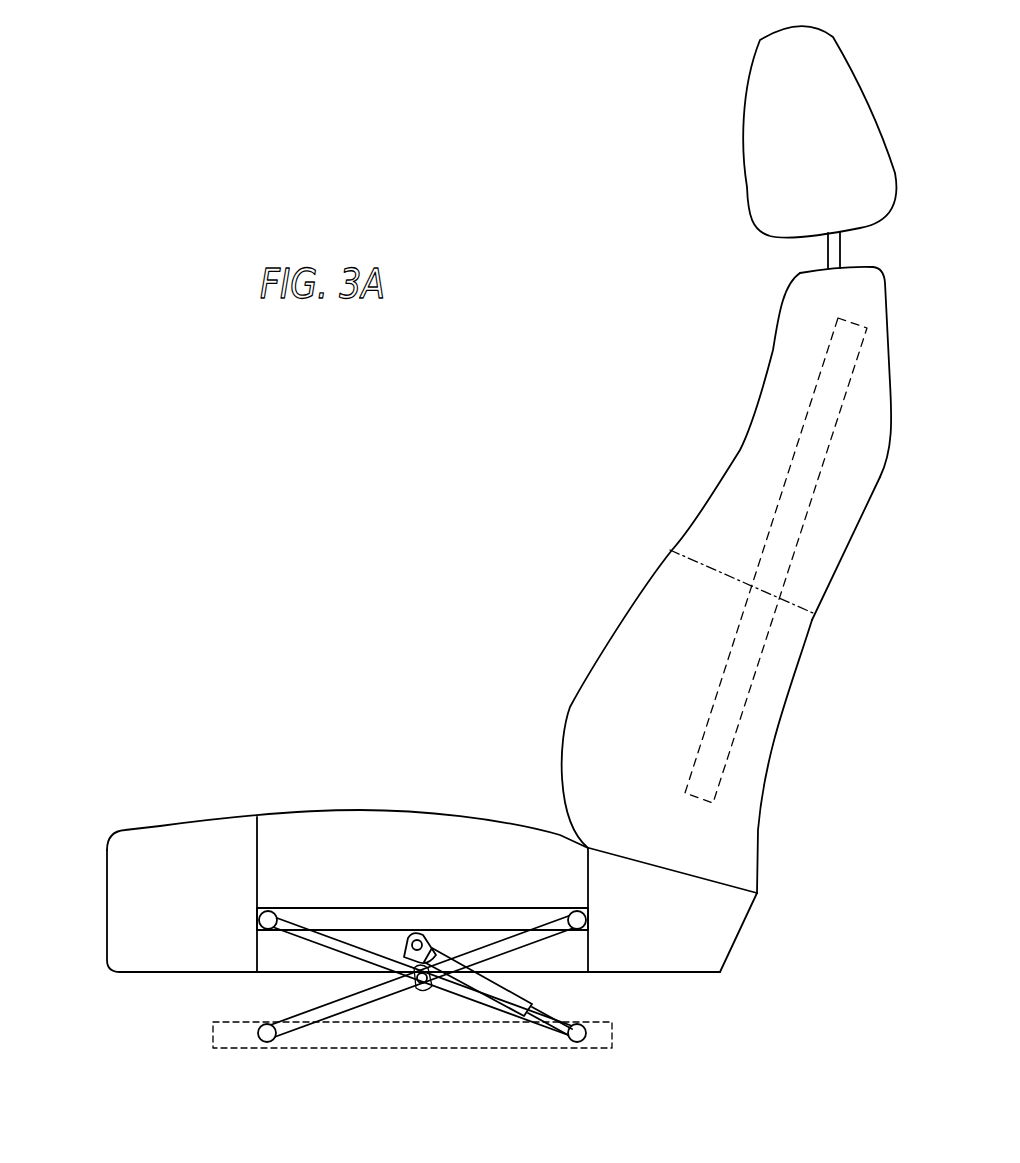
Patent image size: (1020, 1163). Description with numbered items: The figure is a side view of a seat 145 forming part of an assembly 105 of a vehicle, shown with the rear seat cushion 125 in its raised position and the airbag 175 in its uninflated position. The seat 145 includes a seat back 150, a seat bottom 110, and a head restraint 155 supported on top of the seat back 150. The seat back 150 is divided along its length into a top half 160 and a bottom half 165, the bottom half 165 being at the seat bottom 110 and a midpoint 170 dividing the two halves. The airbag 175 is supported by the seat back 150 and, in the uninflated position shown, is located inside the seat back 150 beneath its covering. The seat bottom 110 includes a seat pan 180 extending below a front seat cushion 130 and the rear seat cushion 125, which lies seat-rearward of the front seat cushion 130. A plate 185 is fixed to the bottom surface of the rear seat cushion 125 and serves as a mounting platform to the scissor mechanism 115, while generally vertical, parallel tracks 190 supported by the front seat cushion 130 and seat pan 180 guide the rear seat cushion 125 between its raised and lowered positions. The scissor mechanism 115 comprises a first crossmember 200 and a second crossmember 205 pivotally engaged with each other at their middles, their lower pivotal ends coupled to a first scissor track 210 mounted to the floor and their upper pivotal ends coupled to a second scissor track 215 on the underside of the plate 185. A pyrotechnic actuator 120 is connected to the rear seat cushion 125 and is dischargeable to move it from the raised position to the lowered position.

The assembly 105 is at (801, 948).
The seat bottom 110 is at (97, 907).
The scissor mechanism 115 is at (537, 903).
The pyrotechnic actuator 120 is at (480, 975).
The rear seat cushion 125 is at (418, 812).
The front seat cushion 130 is at (148, 830).
The seat 145 is at (585, 94).
The seat back 150 is at (887, 310).
The head restraint 155 is at (840, 50).
The top half 160 is at (840, 557).
The bottom half 165 is at (785, 707).
The midpoint 170 is at (707, 563).
The airbag 175 is at (823, 470).
The seat pan 180 is at (280, 974).
The plate 185 is at (365, 915).
The track 190 is at (258, 860).
The first crossmember 200 is at (317, 1010).
The second crossmember 205 is at (300, 945).
The first scissor track 210 is at (247, 1050).
The second scissor track 215 is at (443, 933).